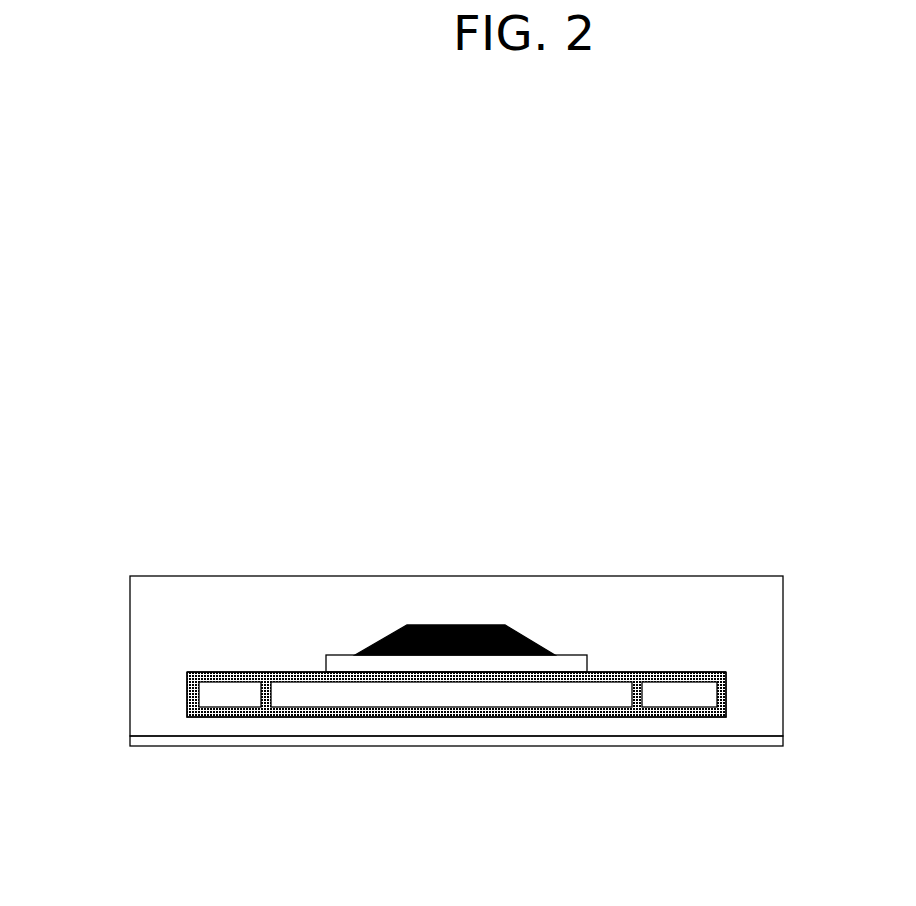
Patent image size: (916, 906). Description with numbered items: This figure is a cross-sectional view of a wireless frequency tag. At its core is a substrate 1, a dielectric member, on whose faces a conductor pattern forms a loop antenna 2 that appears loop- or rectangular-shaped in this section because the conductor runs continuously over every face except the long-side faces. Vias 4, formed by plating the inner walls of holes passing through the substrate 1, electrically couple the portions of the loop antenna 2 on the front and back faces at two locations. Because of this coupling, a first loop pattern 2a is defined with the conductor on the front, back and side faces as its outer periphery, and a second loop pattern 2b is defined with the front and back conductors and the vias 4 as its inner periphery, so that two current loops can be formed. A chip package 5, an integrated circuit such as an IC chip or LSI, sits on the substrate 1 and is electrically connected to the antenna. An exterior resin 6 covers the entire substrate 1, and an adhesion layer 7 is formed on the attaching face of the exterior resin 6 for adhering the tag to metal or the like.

The substrate 1 is at (460, 693).
The loop antenna 2 is at (513, 702).
The first loop pattern 2a is at (188, 717).
The second loop pattern 2b is at (400, 717).
The via 4 is at (263, 705).
The chip package 5 is at (489, 594).
The exterior resin 6 is at (142, 602).
The adhesion layer 7 is at (587, 742).